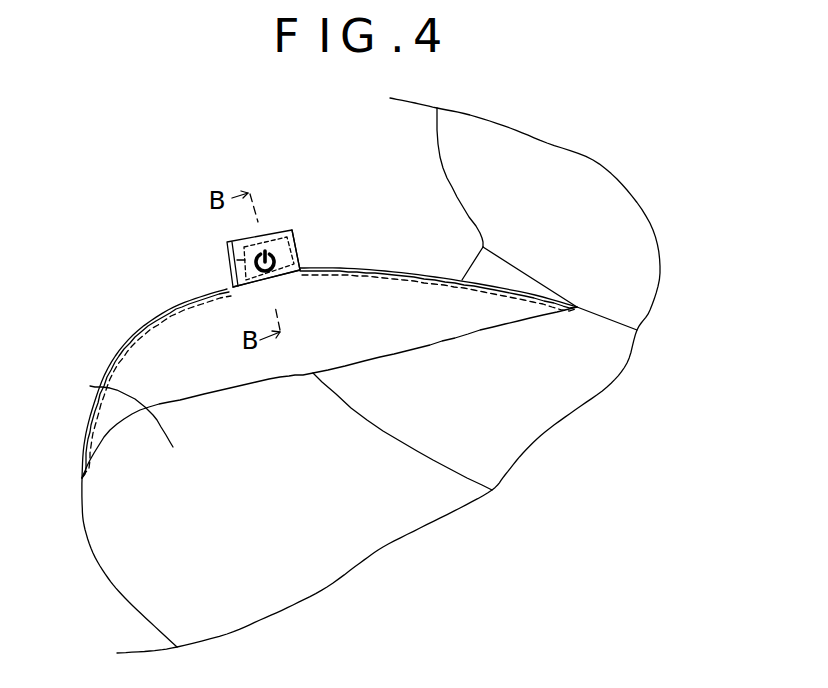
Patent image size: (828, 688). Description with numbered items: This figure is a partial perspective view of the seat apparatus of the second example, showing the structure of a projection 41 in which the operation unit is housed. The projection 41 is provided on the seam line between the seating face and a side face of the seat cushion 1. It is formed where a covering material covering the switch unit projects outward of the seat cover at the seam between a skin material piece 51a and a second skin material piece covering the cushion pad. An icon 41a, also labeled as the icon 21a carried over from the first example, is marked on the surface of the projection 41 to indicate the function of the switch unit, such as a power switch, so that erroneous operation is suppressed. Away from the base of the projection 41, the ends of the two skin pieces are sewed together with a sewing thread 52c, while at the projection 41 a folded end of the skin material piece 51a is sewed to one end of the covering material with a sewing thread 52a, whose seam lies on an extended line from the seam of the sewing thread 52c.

The seat cushion 1 is at (90, 386).
The projection 41 is at (290, 231).
The icon 41a is at (237, 260).
The icon 21a is at (295, 240).
The skin material piece 51a is at (195, 363).
The sewing thread 52a is at (282, 287).
The sewing thread 52c is at (134, 343).